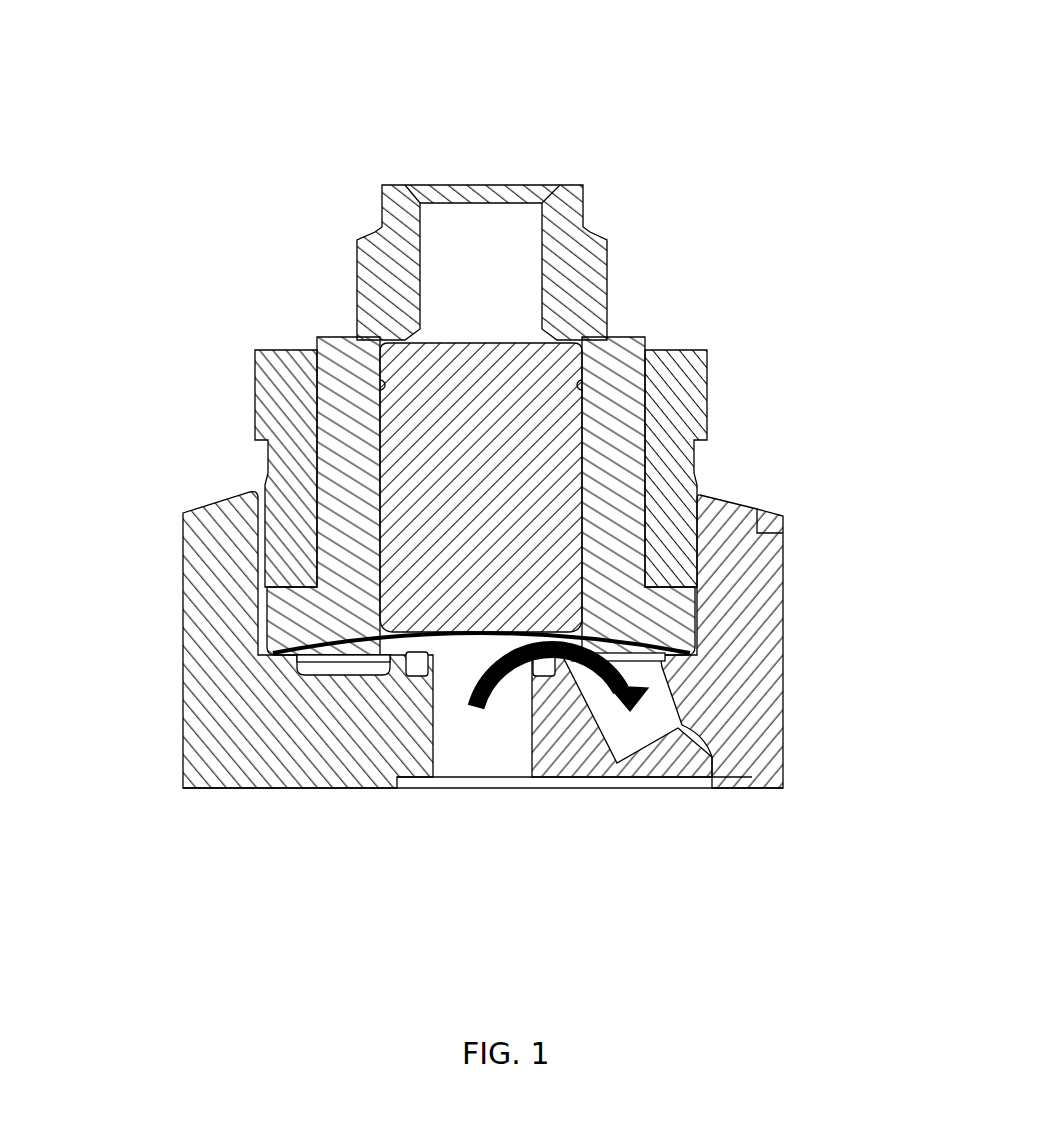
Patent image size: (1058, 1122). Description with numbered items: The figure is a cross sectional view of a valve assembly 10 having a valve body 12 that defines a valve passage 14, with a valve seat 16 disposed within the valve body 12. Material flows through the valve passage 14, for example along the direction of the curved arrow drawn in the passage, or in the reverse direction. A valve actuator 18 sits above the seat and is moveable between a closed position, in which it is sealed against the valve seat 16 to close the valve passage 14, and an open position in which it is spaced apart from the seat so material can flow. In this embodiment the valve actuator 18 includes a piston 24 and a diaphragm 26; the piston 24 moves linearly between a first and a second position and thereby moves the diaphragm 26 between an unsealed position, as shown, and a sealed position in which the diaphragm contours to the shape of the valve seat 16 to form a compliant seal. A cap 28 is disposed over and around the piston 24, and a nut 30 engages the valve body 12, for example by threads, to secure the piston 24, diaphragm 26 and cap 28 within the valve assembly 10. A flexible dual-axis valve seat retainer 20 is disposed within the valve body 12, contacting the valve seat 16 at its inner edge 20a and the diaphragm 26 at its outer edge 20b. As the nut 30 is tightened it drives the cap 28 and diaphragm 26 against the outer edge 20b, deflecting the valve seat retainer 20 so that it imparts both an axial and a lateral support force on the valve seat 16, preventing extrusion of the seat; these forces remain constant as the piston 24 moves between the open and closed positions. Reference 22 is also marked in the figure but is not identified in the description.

The valve assembly 10 is at (258, 112).
The valve body 12 is at (742, 653).
The valve passage 14 is at (490, 680).
The valve seat 16 is at (560, 660).
The valve actuator 18 is at (236, 253).
The dual-axis valve seat retainer 20 is at (658, 662).
The inner edge 20a is at (570, 662).
The outer edge 20b is at (665, 662).
The flow chamber 22 is at (661, 666).
The piston 24 is at (465, 367).
The diaphragm 26 is at (387, 638).
The cap 28 is at (343, 547).
The nut 30 is at (277, 420).